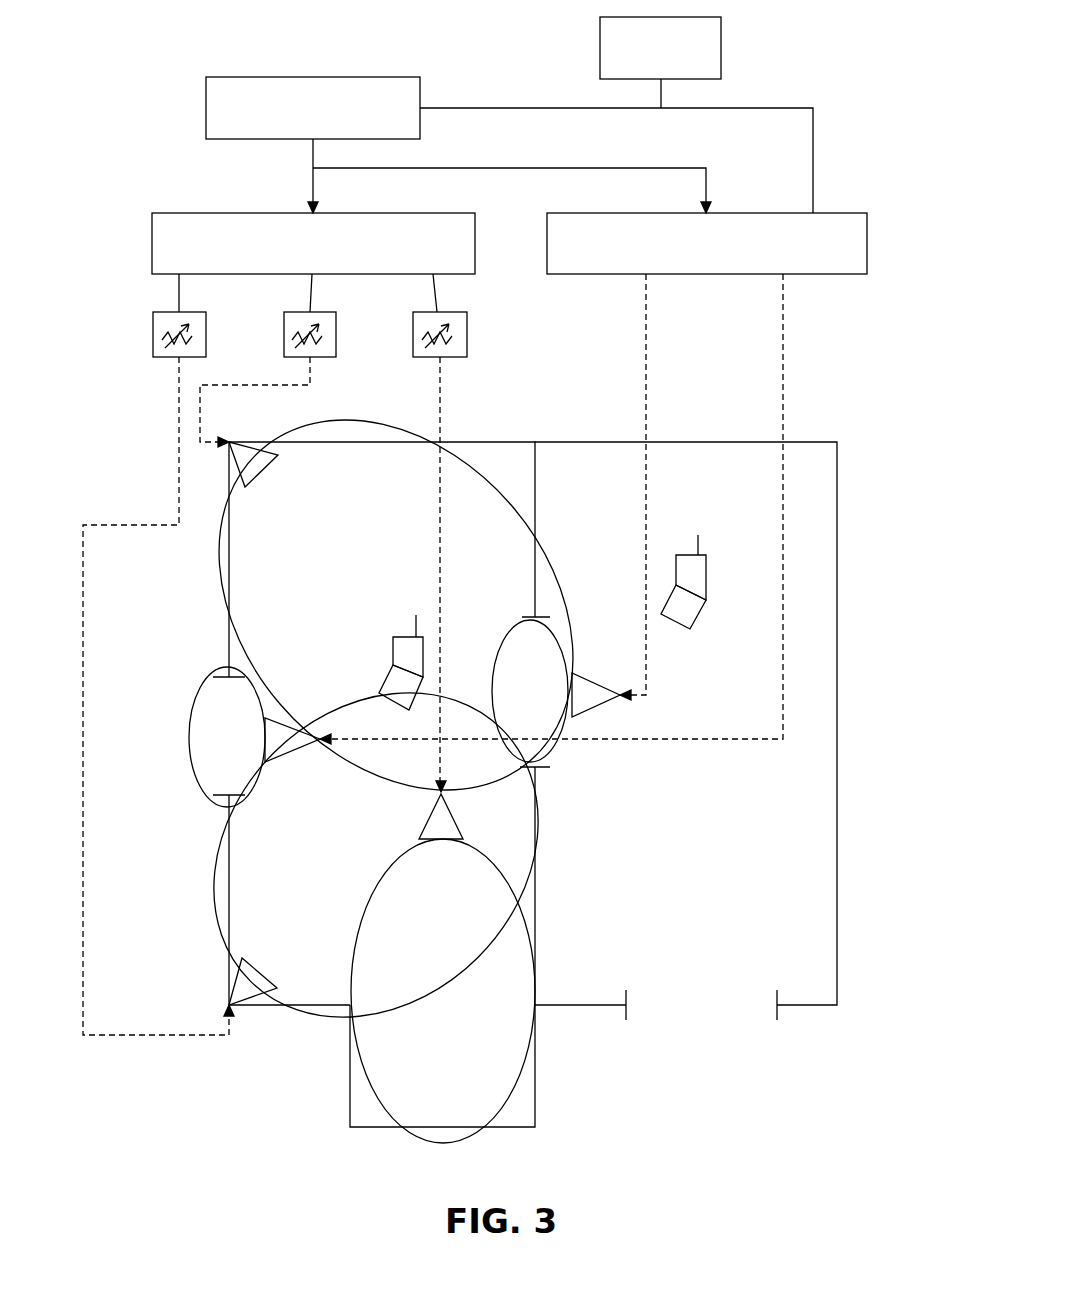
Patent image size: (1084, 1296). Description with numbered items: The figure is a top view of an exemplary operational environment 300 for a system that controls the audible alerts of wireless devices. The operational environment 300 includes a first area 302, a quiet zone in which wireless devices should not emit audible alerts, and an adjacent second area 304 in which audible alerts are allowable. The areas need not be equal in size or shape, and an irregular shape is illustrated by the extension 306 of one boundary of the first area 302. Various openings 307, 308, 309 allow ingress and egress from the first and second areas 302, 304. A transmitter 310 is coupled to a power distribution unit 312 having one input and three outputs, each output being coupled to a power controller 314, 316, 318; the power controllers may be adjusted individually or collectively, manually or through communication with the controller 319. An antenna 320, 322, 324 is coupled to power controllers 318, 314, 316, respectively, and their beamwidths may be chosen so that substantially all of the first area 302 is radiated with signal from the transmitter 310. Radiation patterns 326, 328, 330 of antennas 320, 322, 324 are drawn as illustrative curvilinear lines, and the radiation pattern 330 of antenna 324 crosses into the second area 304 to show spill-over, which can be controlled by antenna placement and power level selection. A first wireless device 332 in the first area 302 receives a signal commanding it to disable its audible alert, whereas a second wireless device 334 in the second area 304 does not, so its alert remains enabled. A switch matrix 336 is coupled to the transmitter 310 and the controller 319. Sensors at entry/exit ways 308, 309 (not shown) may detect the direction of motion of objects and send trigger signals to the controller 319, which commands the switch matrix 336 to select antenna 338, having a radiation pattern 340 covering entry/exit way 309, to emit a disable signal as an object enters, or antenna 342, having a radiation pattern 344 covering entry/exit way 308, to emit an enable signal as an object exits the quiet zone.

The operational environment 300 is at (850, 384).
The first area 302 is at (381, 723).
The second area 304 is at (686, 731).
The extension 306 is at (566, 1091).
The opening 307 is at (715, 1024).
The opening (entry/exit way) 308 is at (580, 762).
The opening (entry/exit way) 309 is at (204, 786).
The transmitter 310 is at (205, 108).
The power distribution unit 312 is at (235, 213).
The power controller 314 is at (207, 335).
The power controller 316 is at (337, 335).
The power controller 318 is at (468, 335).
The controller 319 is at (723, 48).
The antenna 320 is at (428, 822).
The antenna 322 is at (261, 968).
The antenna 324 is at (273, 457).
The radiation pattern 326 is at (362, 893).
The radiation pattern 328 is at (217, 855).
The radiation pattern 330 is at (356, 420).
The first wireless device 332 is at (400, 636).
The second wireless device 334 is at (708, 570).
The switch matrix 336 is at (867, 245).
The antenna 338 is at (288, 722).
The radiation pattern 340 is at (197, 702).
The antenna 342 is at (593, 683).
The radiation pattern 344 is at (508, 638).